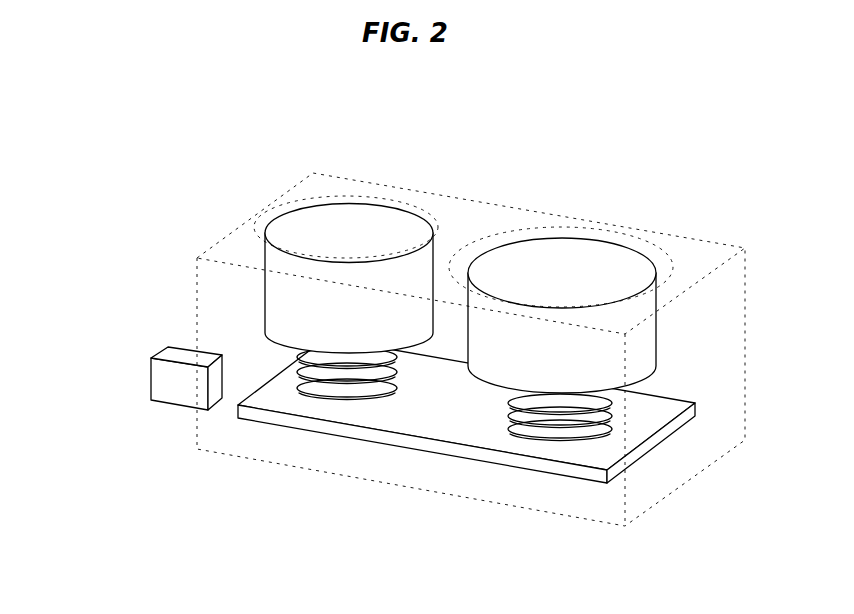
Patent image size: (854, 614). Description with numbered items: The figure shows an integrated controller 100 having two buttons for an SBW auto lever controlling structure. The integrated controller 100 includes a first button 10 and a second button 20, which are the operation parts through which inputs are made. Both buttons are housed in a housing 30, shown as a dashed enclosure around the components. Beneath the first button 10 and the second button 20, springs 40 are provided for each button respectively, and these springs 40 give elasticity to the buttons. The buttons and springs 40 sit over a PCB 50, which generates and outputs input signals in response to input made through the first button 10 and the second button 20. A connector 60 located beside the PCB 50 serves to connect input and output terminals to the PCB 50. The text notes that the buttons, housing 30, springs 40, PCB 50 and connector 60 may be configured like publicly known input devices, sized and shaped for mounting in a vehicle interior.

The integrated controller 100 is at (205, 170).
The first button 10 is at (342, 215).
The second button 20 is at (598, 258).
The housing 30 is at (662, 485).
The springs 40 is at (342, 385).
The PCB 50 is at (420, 445).
The connector 60 is at (170, 357).